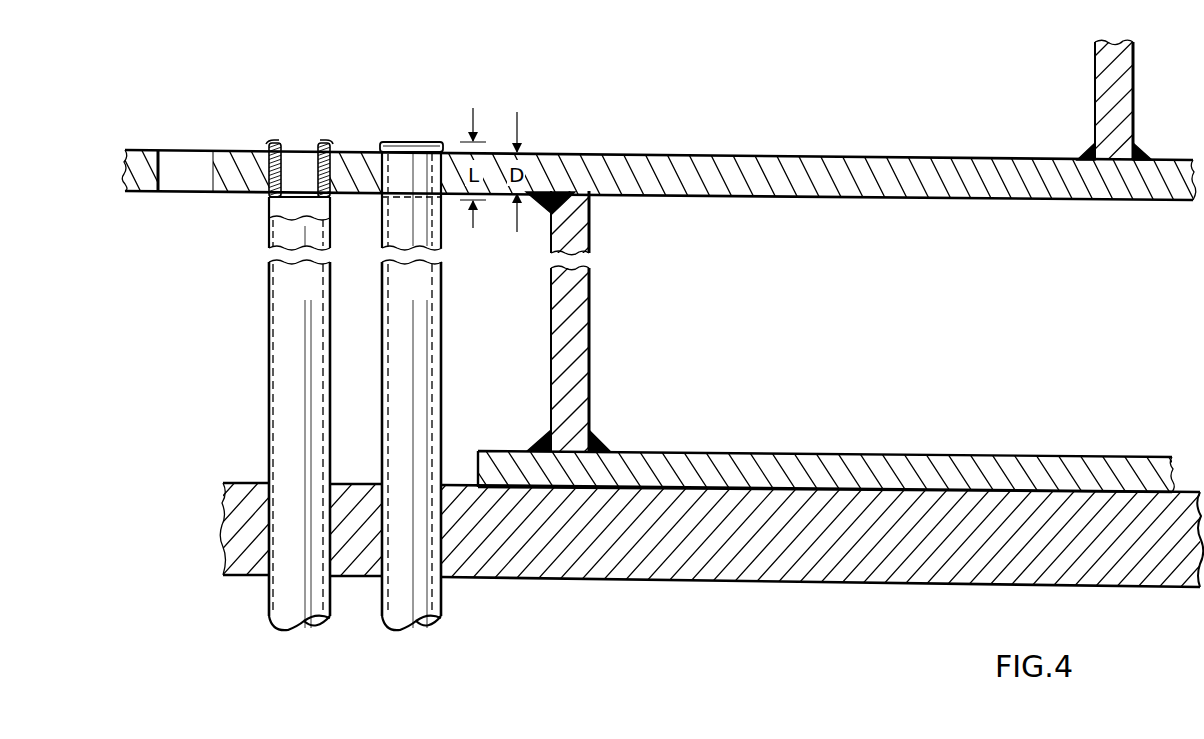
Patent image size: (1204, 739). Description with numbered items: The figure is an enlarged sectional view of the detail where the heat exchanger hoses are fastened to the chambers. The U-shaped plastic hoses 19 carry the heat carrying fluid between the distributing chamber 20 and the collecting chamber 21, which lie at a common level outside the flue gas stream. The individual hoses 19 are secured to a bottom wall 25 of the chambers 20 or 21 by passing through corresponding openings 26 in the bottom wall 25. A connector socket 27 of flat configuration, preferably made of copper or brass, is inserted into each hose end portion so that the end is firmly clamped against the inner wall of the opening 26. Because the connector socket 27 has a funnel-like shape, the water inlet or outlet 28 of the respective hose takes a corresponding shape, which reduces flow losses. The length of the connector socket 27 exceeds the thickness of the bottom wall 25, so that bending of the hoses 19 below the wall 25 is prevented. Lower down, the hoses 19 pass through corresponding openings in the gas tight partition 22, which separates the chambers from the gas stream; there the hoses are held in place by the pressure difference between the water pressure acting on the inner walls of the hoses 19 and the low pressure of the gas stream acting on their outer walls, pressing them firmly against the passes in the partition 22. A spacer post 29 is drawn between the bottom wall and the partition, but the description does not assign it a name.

The U-shaped plastic hoses 19 is at (268, 355).
The distributing chamber 20 is at (1180, 127).
The collecting chamber 21 is at (648, 160).
The gas tight partition 22 is at (600, 557).
The bottom wall 25 is at (662, 168).
The openings 26 is at (160, 170).
The connector socket 27 is at (270, 200).
The water inlet or outlet 28 is at (322, 143).
The spacer post 29 is at (590, 333).